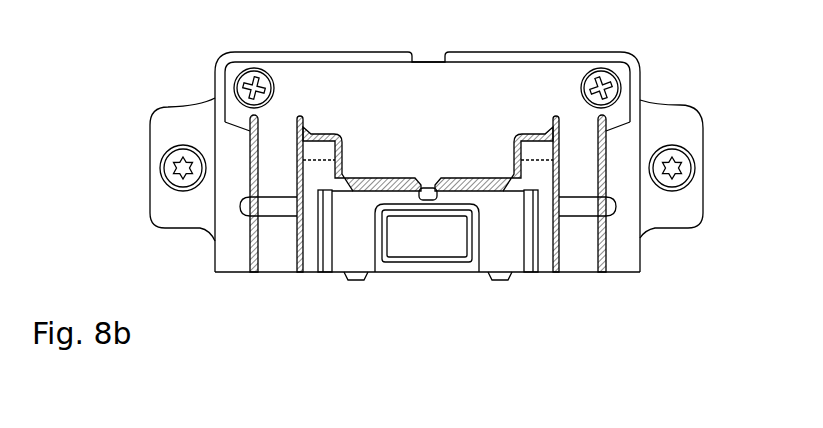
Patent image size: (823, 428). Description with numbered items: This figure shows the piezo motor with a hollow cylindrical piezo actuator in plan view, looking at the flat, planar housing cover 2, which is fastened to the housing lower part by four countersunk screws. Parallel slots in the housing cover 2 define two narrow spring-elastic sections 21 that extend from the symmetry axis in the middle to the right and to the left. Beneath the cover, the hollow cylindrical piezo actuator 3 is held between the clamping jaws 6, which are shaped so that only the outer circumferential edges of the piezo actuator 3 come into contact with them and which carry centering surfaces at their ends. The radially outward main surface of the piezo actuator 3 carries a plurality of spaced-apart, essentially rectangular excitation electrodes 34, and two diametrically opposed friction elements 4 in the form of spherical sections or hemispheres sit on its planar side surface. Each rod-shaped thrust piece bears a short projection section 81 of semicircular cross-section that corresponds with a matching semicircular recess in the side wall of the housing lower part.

The housing cover 2 is at (498, 94).
The spring-elastic section 21 is at (277, 167).
The projection section 81 is at (250, 207).
The clamping jaw 6 is at (347, 243).
The friction element 4 is at (497, 277).
The piezo actuator 3 is at (377, 338).
The excitation electrode 34 is at (440, 247).